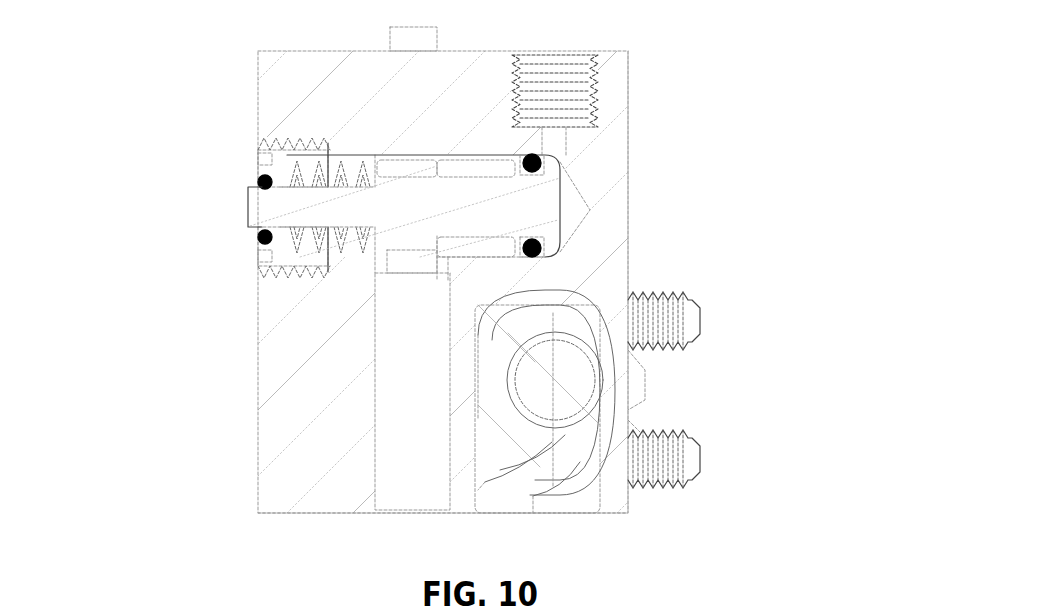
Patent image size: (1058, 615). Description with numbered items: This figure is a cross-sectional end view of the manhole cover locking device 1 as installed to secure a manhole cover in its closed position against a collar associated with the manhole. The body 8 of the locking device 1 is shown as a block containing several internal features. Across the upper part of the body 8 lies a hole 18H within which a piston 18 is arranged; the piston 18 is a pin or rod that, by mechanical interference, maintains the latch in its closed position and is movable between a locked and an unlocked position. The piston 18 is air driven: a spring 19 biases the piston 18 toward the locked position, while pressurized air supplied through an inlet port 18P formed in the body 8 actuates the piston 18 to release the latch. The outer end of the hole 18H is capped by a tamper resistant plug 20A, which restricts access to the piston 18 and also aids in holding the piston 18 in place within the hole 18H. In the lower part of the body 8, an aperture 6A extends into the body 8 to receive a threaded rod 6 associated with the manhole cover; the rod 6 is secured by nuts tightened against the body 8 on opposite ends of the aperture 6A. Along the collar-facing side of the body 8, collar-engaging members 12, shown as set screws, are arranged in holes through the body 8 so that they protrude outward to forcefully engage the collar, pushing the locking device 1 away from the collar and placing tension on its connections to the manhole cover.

The manhole cover locking device 1 is at (529, 302).
The rod 6 is at (607, 386).
The aperture 6A is at (590, 368).
The body 8 is at (529, 263).
The collar-engaging member 12 is at (721, 380).
The piston 18 is at (375, 217).
The hole 18H is at (252, 235).
The inlet port 18P is at (603, 79).
The spring 19 is at (336, 421).
The tamper resistant plug 20A is at (266, 174).